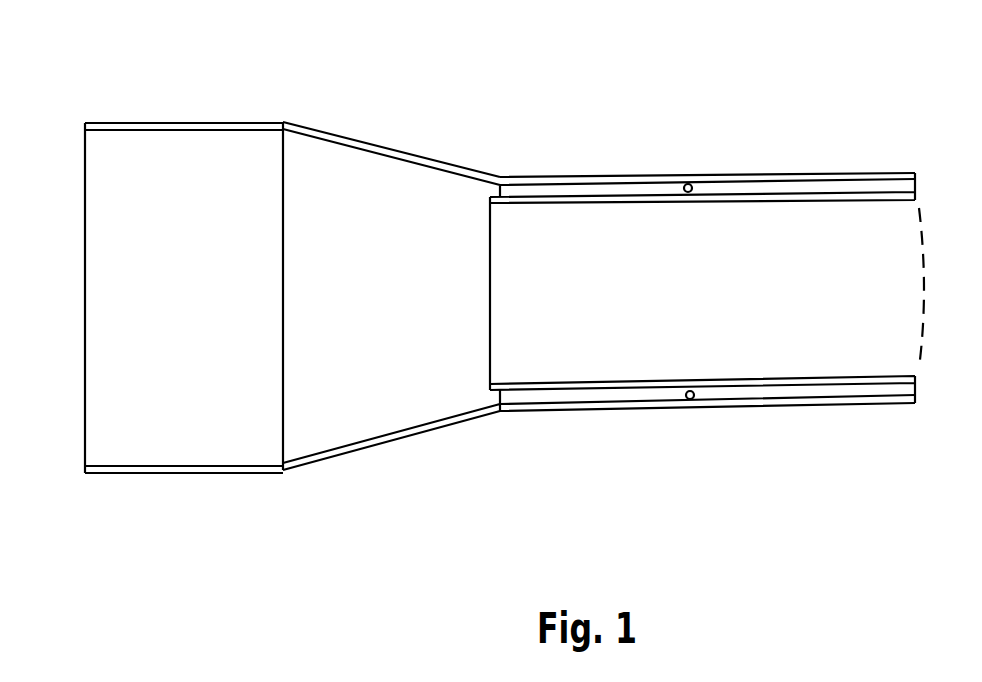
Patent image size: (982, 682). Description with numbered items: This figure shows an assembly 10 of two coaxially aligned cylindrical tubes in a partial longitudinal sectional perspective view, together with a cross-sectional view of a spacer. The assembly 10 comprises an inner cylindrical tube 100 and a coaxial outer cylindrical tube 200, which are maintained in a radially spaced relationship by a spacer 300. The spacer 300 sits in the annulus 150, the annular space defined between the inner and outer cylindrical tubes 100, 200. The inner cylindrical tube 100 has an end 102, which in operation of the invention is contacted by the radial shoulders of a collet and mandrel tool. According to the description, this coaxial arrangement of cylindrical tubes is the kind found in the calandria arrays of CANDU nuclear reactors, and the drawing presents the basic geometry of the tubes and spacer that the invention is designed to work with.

The assembly 10 is at (521, 302).
The inner cylindrical tube 100 is at (843, 380).
The end of the inner cylindrical tube 102 is at (488, 245).
The annulus 150 is at (597, 193).
The outer cylindrical tube 200 is at (287, 470).
The spacer 300 is at (700, 183).